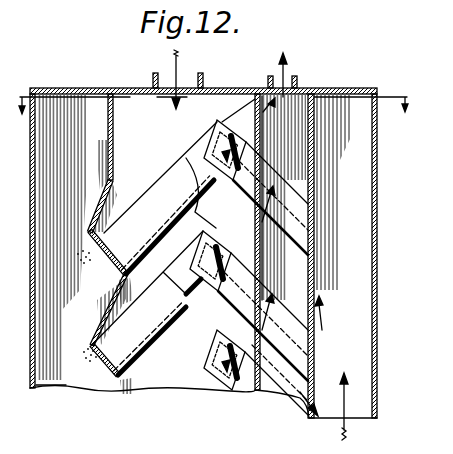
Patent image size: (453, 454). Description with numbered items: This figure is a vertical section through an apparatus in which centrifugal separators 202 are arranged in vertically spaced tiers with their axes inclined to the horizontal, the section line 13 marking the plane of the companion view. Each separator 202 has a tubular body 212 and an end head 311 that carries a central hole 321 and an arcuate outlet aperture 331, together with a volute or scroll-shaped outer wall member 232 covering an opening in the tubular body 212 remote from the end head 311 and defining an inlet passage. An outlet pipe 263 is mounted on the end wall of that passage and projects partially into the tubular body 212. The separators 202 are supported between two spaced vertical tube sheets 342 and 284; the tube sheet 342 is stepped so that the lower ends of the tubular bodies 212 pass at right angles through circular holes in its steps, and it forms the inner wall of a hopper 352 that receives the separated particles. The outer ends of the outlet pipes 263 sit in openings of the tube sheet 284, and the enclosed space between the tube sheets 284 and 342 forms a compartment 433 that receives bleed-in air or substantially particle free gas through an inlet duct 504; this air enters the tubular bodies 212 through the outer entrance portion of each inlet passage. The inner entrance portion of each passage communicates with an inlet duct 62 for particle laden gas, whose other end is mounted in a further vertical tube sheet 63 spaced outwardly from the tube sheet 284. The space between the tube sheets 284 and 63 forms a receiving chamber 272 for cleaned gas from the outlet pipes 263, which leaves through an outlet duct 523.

The section line 13 is at (222, 96).
The inlet duct 504 is at (154, 77).
The outlet duct 523 is at (292, 78).
The outlet pipe 263 is at (245, 112).
The tube sheet 342 is at (108, 135).
The centrifugal separator 202 is at (146, 184).
The tube sheet 284 is at (258, 172).
The tubular body 212 is at (176, 240).
The volute outer wall member 232 is at (200, 250).
The inlet duct 62 is at (275, 248).
The tube sheet 63 is at (312, 337).
The arcuate outlet aperture 331 is at (90, 245).
The central hole 321 is at (103, 262).
The end head 311 is at (115, 282).
The compartment 433 is at (155, 380).
The hopper 352 is at (73, 380).
The receiving chamber 272 is at (282, 390).